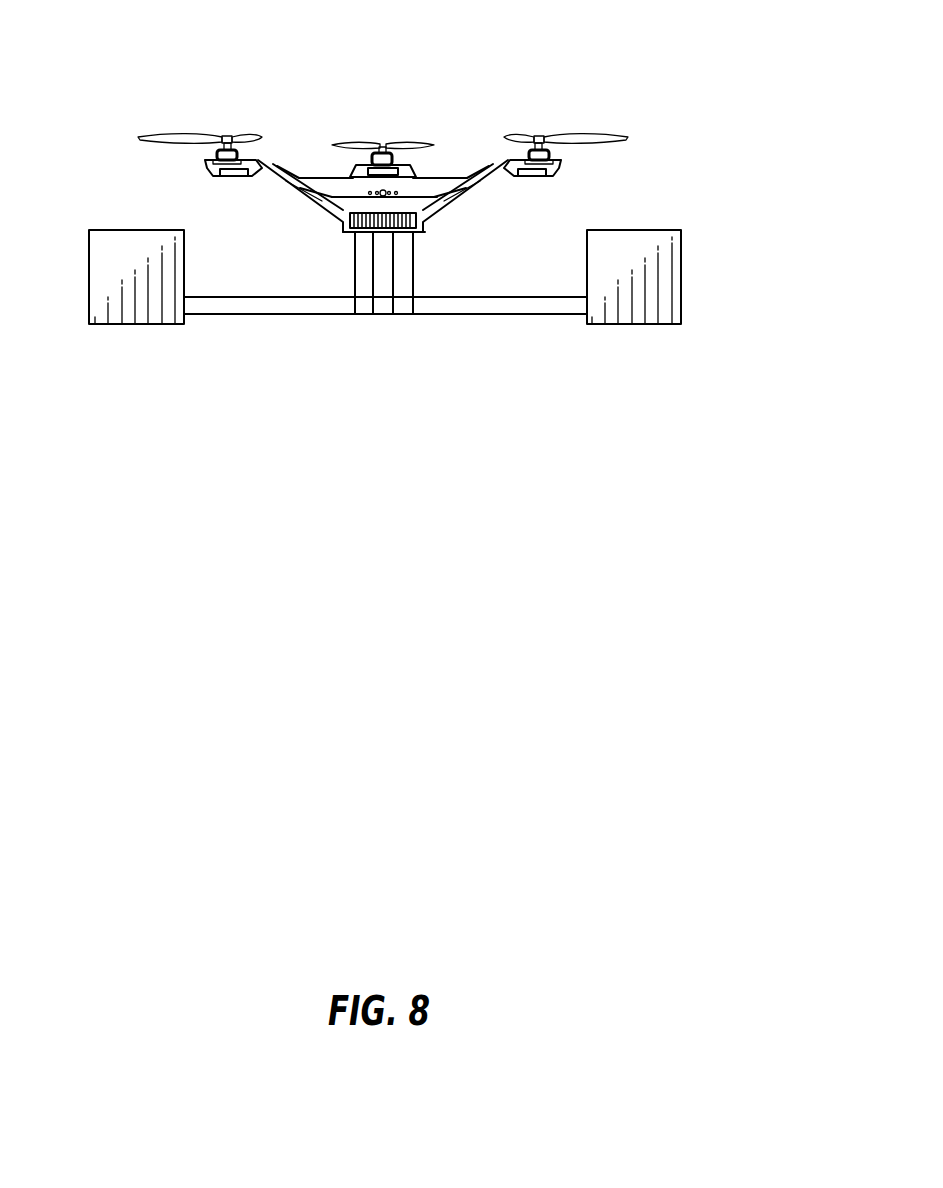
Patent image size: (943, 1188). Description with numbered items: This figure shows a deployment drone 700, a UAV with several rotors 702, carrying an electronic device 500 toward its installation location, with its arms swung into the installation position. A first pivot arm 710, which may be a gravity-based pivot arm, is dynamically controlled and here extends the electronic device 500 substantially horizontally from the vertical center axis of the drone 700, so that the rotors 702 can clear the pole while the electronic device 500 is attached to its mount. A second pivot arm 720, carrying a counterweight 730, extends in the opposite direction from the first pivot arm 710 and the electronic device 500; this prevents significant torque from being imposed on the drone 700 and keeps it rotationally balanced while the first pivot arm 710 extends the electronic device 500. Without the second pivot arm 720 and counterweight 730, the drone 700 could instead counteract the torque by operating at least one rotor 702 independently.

The electronic device 500 is at (110, 230).
The deployment drone 700 is at (383, 121).
The rotor 702 is at (249, 111).
The pivot arm 710 is at (309, 314).
The second pivot arm 720 is at (430, 314).
The counterweight 730 is at (681, 267).